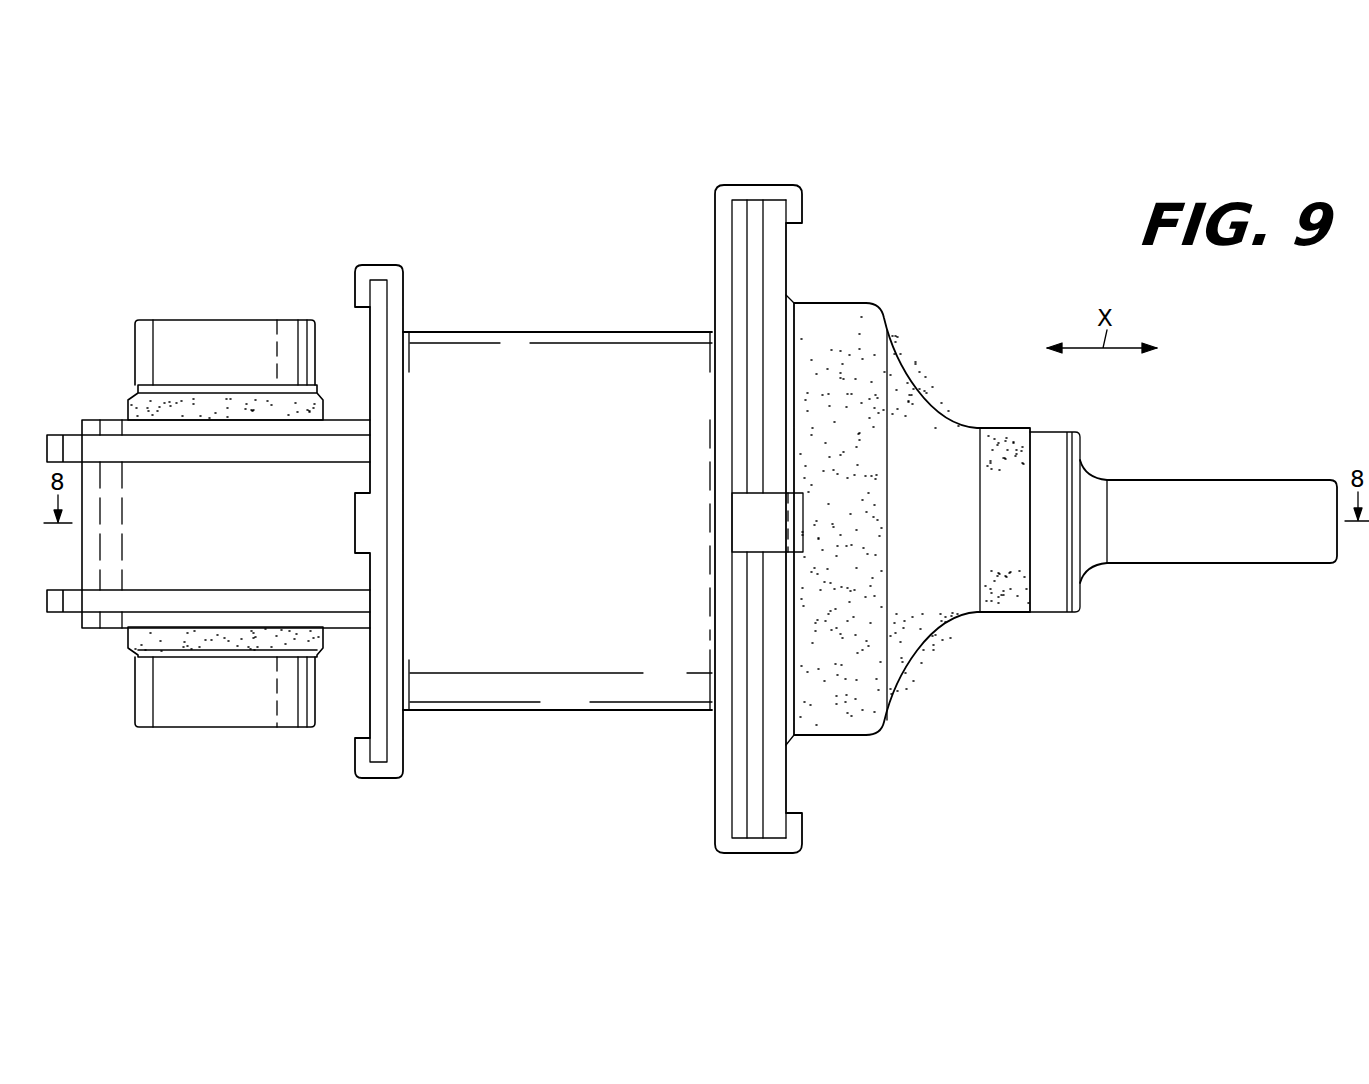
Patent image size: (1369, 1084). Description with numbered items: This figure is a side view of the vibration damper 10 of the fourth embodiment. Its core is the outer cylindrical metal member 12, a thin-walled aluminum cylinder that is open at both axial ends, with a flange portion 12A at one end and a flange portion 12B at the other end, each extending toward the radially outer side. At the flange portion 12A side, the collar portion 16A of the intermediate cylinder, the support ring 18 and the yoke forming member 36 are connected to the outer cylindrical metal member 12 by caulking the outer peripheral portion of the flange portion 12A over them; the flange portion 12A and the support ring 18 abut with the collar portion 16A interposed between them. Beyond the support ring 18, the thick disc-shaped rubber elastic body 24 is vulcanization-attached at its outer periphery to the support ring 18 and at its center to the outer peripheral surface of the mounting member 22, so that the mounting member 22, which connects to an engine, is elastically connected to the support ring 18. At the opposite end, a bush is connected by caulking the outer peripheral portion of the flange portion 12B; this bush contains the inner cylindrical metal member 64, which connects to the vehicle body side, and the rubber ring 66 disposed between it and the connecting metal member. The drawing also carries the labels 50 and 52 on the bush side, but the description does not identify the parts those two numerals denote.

The vibration damper 10 is at (1003, 243).
The outer cylindrical metal member 12 is at (598, 332).
The flange portion 12A is at (712, 262).
The flange portion 12B is at (403, 305).
The collar portion 16A is at (715, 243).
The support ring 18 is at (786, 265).
The mounting member 22 is at (1152, 480).
The rubber elastic body 24 is at (905, 372).
The yoke forming member 36 is at (786, 250).
The fastening assembly 50 is at (272, 301).
The mounting plate 52 is at (349, 420).
The inner cylindrical metal member 64 is at (183, 333).
The rubber ring 66 is at (150, 405).